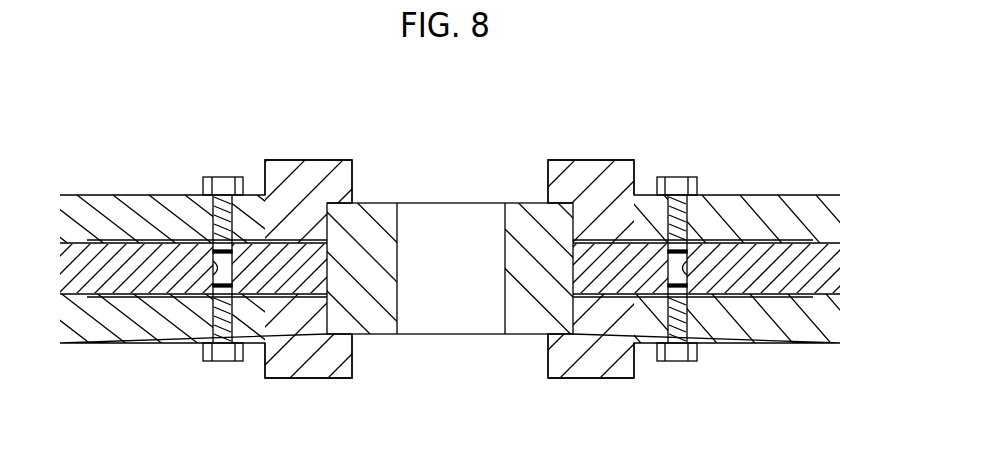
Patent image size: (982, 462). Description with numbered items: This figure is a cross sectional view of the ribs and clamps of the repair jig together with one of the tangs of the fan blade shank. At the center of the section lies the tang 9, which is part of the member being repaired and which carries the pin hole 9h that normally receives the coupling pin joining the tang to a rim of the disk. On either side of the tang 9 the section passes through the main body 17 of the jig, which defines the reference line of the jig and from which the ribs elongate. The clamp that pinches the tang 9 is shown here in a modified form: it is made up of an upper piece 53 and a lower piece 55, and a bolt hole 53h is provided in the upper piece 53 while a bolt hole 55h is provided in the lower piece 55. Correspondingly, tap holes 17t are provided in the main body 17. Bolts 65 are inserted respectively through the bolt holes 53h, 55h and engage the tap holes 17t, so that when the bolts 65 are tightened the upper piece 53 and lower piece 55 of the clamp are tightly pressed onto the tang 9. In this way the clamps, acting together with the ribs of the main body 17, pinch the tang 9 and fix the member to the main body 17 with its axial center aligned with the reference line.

The tang 9 is at (523, 222).
The pin hole 9h is at (397, 258).
The main body 17 is at (122, 265).
The tap hole 17t is at (152, 343).
The upper piece 53 is at (311, 168).
The bolt hole 53h is at (221, 199).
The lower piece 55 is at (308, 365).
The bolt hole 55h is at (217, 355).
The bolt 65 is at (197, 187).